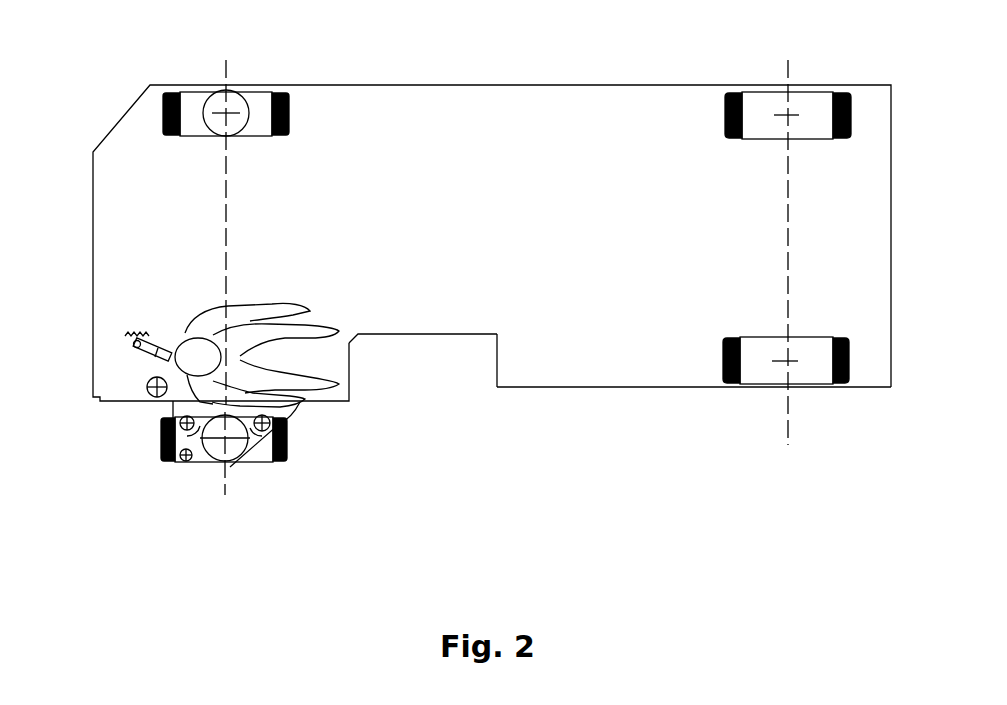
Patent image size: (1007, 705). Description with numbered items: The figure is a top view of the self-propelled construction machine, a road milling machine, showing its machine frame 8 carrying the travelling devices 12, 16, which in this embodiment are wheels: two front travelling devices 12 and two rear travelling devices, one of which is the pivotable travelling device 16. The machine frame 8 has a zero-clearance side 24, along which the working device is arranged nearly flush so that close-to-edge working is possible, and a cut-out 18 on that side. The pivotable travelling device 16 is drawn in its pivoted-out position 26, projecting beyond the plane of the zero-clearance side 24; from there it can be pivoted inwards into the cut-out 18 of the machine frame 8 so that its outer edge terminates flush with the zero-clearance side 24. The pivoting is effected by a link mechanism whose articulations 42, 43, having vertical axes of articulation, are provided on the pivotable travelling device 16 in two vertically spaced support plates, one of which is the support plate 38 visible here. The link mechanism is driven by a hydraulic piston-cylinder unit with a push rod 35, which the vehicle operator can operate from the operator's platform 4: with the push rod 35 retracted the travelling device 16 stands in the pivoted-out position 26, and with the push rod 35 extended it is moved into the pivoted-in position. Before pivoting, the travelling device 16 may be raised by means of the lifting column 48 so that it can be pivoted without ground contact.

The operator's platform 4 is at (373, 379).
The machine frame 8 is at (855, 227).
The travelling devices 12 is at (257, 105).
The pivotable travelling device 16 is at (208, 454).
The cut-out 18 is at (472, 383).
The zero-clearance side 24 is at (547, 387).
The pivoted-out position 26 is at (184, 414).
The push rod 35 is at (157, 352).
The support plate 38 is at (198, 460).
The articulation 42 is at (162, 422).
The articulation 43 is at (288, 430).
The lifting column 48 is at (227, 453).